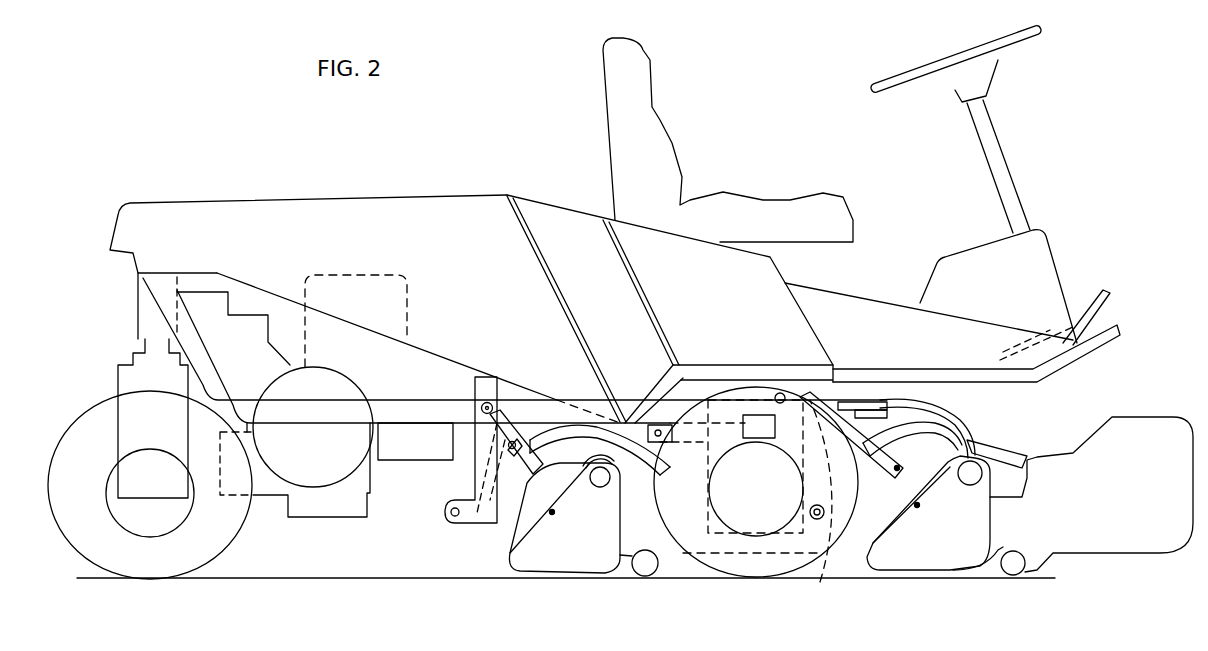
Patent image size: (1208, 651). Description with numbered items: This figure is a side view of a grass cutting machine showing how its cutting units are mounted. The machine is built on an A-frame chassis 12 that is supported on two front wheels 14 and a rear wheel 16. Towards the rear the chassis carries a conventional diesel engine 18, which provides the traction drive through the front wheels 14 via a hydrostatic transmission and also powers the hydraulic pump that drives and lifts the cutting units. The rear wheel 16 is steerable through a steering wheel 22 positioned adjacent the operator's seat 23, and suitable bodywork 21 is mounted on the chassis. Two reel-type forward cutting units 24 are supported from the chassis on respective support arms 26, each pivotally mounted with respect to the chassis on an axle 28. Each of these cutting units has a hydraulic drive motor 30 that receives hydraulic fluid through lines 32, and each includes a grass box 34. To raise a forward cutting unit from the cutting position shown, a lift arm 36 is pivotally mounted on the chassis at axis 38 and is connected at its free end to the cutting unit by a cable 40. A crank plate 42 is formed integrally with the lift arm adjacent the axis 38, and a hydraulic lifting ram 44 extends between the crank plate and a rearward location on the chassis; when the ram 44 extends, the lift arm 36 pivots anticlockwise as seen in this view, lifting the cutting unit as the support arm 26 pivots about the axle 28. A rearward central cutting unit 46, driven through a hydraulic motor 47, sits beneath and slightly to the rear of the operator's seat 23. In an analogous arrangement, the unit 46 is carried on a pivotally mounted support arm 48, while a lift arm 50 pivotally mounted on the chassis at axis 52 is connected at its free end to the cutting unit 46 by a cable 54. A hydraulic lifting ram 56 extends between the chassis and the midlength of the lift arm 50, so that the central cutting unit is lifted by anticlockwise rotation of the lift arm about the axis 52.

The A-frame chassis 12 is at (430, 424).
The front wheels 14 is at (720, 570).
The rear wheel 16 is at (237, 543).
The diesel engine 18 is at (408, 380).
The bodywork 21 is at (478, 266).
The steering wheel 22 is at (945, 60).
The operator's seat 23 is at (670, 138).
The forward cutting units 24 is at (955, 557).
The support arms 26 is at (1003, 440).
The axle 28 is at (769, 508).
The hydraulic drive motor 30 is at (953, 473).
The lines 32 is at (950, 407).
The grass box 34 is at (1130, 504).
The lift arm 36 is at (900, 387).
The pivot axis 38 is at (777, 394).
The cable 40 is at (835, 510).
The crank plate 42 is at (770, 501).
The hydraulic lifting ram 44 is at (657, 393).
The rearward central cutting unit 46 is at (595, 557).
The hydraulic motor 47 is at (592, 470).
The support arm 48 is at (566, 425).
The lift arm 50 is at (525, 423).
The pivot axis 52 is at (488, 402).
The cable 54 is at (507, 528).
The hydraulic lifting ram 56 is at (477, 477).